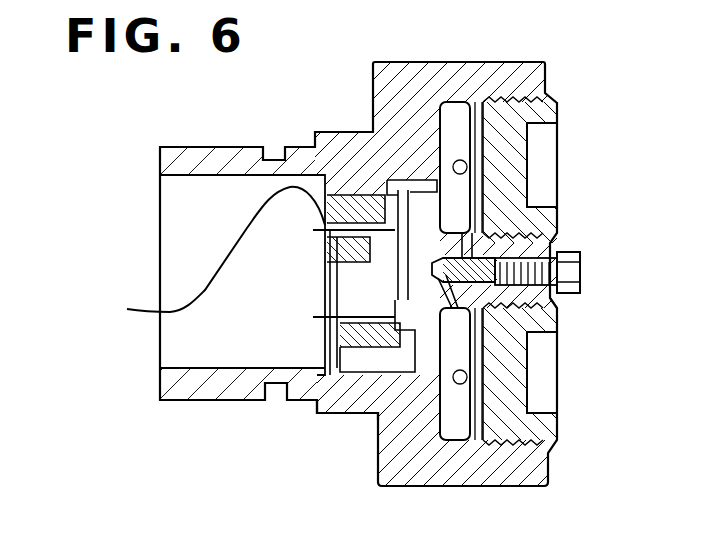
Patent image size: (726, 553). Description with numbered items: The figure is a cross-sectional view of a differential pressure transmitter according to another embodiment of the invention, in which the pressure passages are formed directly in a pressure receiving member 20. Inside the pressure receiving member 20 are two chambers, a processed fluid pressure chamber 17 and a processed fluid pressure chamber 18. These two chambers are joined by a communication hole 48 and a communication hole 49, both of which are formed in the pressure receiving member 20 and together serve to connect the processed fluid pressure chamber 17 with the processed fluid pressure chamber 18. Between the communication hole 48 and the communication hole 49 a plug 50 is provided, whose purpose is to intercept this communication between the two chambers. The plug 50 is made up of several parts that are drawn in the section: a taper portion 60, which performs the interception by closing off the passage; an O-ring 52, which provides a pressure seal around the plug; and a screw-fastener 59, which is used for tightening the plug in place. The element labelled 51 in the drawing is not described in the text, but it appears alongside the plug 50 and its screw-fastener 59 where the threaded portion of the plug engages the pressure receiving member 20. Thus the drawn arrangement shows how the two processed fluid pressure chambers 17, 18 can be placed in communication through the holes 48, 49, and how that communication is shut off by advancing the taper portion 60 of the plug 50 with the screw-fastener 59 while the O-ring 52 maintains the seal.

The processed fluid pressure chamber 17 is at (460, 120).
The processed fluid pressure chamber 18 is at (458, 425).
The pressure receiving member 20 is at (406, 62).
The communication hole 48 is at (443, 258).
The communication hole 49 is at (415, 397).
The plug 50 is at (580, 254).
The threaded nut 51 is at (543, 232).
The O-ring 52 is at (495, 330).
The screw-fastener 59 is at (548, 298).
The taper portion 60 is at (460, 310).